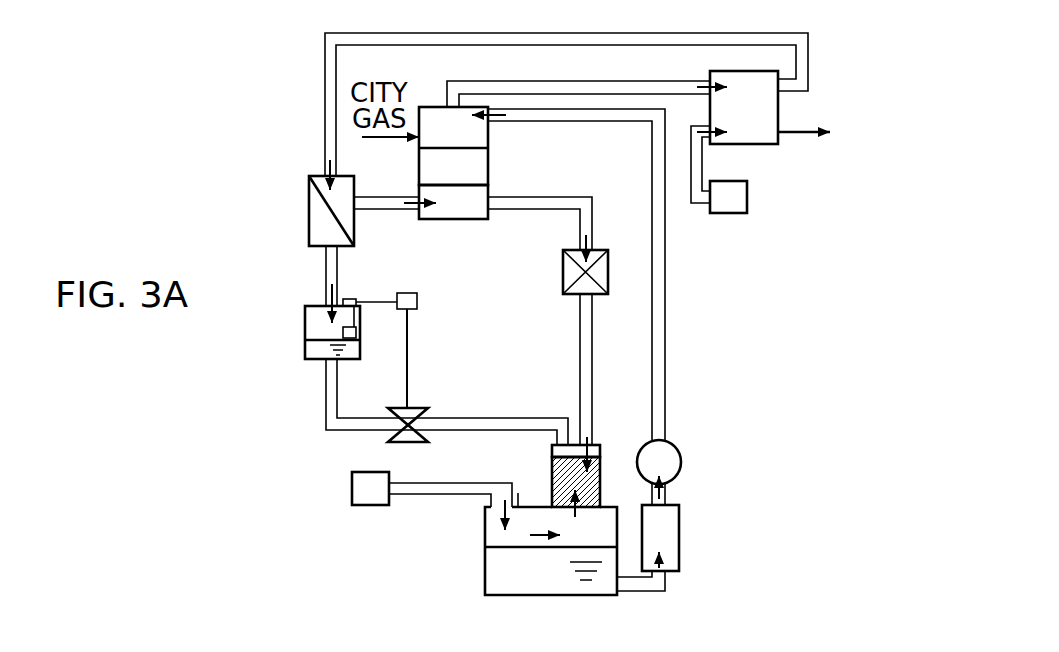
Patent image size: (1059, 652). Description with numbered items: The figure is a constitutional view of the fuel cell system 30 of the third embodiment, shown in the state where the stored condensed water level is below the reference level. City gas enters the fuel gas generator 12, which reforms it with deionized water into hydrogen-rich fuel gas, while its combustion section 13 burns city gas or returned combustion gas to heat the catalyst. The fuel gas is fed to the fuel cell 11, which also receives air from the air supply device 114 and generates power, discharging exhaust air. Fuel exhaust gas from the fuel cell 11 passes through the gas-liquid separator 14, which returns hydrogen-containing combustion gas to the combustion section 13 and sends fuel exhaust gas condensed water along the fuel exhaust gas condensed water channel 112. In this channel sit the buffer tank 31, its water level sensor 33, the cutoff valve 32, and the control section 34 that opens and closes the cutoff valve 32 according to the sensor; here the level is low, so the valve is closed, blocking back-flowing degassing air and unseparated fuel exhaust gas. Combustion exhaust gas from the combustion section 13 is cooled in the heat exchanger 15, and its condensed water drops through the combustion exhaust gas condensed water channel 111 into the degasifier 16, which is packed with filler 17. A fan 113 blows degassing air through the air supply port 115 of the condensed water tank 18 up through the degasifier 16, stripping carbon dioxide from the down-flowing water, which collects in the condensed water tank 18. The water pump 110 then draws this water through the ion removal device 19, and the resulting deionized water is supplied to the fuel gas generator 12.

The fuel cell system 30 is at (308, 68).
The fuel gas generator 12 is at (432, 102).
The combustion section 13 is at (437, 213).
The fuel cell 11 is at (772, 115).
The air supply device 114 is at (735, 202).
The gas-liquid separator 14 is at (313, 245).
The fuel exhaust gas condensed water channel 112 is at (340, 280).
The buffer tank 31 is at (313, 357).
The water level sensor 33 is at (352, 340).
The control section 34 is at (417, 298).
The cutoff valve 32 is at (415, 405).
The heat exchanger 15 is at (600, 250).
The combustion exhaust gas condensed water channel 111 is at (592, 317).
The degasifier 16 is at (598, 443).
The filler 17 is at (590, 485).
The water pump 110 is at (683, 452).
The ion removal device 19 is at (672, 537).
The condensed water tank 18 is at (497, 578).
The air supply port 115 is at (518, 495).
The fan 113 is at (358, 490).